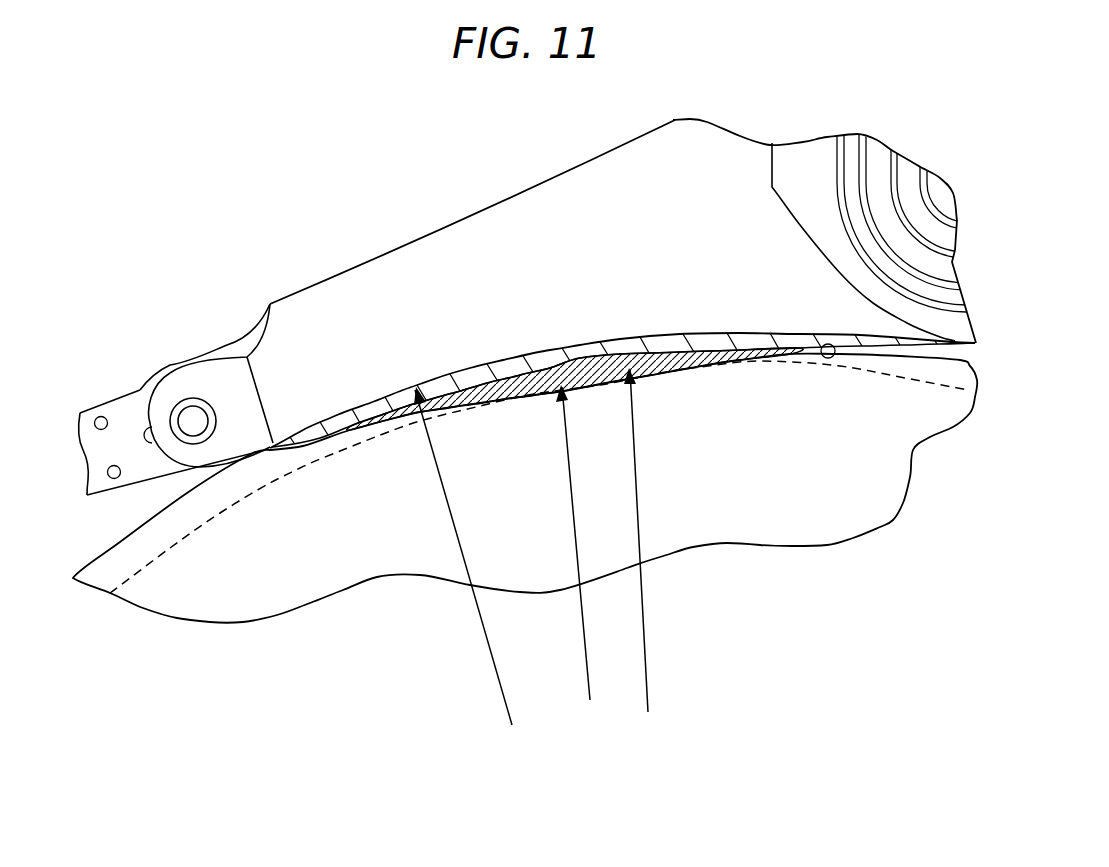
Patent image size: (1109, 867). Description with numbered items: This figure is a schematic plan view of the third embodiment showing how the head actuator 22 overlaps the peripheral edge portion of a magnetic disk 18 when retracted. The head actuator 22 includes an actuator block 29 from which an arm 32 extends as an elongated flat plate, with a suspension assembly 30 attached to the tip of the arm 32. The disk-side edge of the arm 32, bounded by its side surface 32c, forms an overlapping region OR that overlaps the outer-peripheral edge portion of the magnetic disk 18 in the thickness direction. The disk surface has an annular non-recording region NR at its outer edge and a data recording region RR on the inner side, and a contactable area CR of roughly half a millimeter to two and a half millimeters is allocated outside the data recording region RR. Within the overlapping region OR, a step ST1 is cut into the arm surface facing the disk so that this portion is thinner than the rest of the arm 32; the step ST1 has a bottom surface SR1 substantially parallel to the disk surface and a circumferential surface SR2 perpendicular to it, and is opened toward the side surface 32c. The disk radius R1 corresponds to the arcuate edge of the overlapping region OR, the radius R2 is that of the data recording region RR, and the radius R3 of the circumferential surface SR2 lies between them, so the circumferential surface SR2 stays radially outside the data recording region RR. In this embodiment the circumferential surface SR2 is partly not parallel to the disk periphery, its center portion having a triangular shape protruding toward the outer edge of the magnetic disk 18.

The magnetic disk 18 is at (813, 536).
The head actuator 22 is at (543, 152).
The actuator block 29 is at (800, 160).
The suspension assembly 30 is at (122, 415).
The arm 32 is at (475, 232).
The side surface 32c is at (826, 344).
The contactable area CR is at (373, 409).
The overlapping region OR is at (671, 326).
The bottom surface SR1 is at (495, 404).
The circumferential surface SR2 is at (538, 402).
The step ST1 is at (654, 382).
The data recording region RR is at (897, 374).
The non-recording region NR is at (930, 370).
The disk radius R1 is at (497, 672).
The radius of the data recording region R2 is at (587, 670).
The radius of the circumferential surface R3 is at (650, 687).